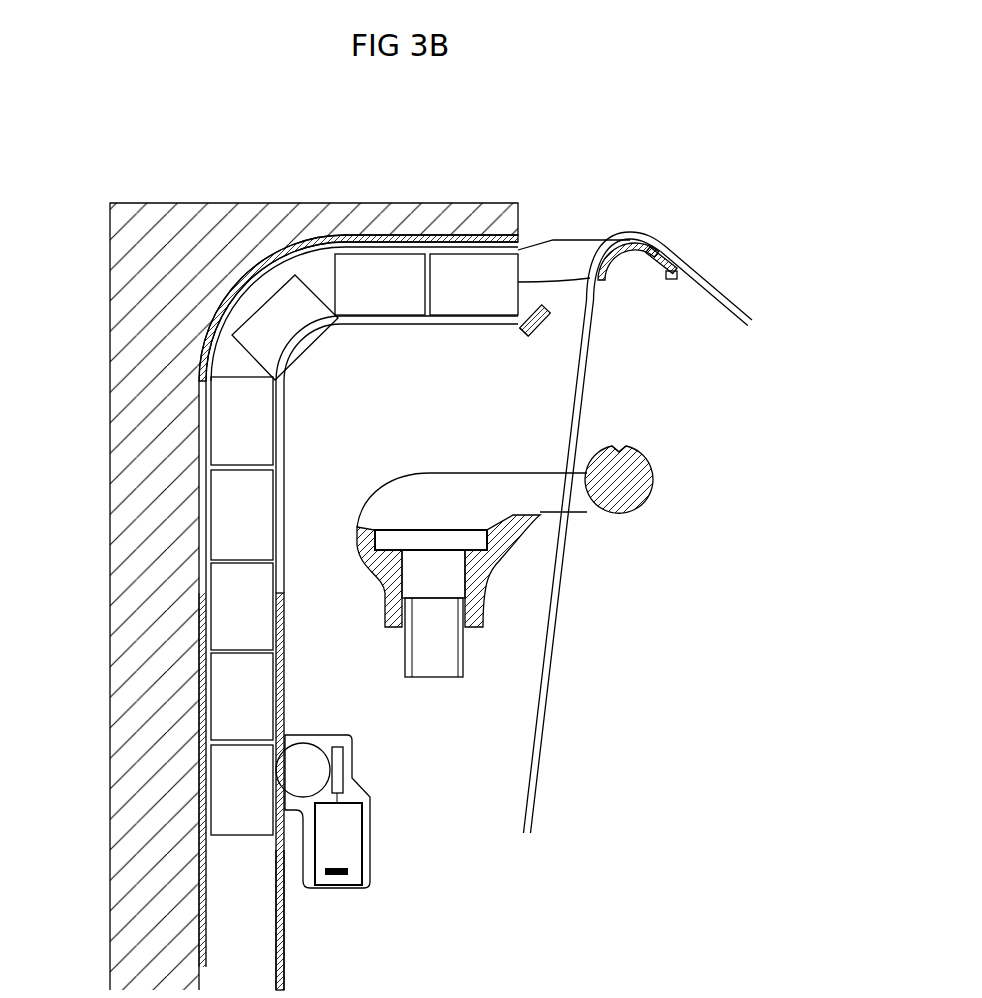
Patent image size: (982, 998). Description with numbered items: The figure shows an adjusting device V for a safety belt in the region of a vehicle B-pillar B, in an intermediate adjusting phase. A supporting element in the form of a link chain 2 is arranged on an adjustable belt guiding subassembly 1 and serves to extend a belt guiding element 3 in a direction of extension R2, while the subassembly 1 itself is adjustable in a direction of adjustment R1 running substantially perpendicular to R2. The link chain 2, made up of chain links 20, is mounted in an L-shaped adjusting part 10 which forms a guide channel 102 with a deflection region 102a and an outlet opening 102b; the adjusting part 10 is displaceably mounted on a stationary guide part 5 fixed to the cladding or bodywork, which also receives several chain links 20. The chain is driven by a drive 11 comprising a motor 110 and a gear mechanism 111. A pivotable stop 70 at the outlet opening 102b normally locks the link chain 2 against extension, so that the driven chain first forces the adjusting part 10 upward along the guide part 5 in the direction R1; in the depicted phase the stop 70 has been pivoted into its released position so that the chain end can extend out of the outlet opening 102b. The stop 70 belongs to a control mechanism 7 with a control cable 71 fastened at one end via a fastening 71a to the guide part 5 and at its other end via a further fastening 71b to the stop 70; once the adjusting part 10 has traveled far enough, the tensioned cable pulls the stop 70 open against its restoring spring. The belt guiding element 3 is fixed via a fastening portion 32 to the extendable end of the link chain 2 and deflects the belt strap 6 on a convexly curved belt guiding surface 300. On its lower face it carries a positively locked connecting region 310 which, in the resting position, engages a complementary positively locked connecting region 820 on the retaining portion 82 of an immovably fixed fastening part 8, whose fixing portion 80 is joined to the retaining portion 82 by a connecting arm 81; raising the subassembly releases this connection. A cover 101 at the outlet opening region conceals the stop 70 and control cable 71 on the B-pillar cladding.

The belt guiding subassembly 1 is at (437, 820).
The link chain 2 is at (262, 893).
The belt guiding element 3 is at (645, 495).
The guide part 5 is at (200, 656).
The belt strap 6 is at (729, 291).
The control mechanism 7 is at (432, 585).
The fastening part 8 is at (516, 549).
The adjusting part 10 is at (200, 427).
The drive 11 is at (359, 839).
The chain links 20 is at (232, 762).
The fastening portion 32 is at (573, 280).
The stop 70 is at (538, 307).
The control cable 71 is at (327, 350).
The fastening 71a is at (276, 596).
The further fastening 71b is at (522, 331).
The fixing portion 80 is at (365, 532).
The connecting arm 81 is at (578, 505).
The retaining portion 82 is at (636, 490).
The cover 101 is at (377, 235).
The guide channel 102 is at (200, 562).
The deflection region 102a is at (257, 288).
The outlet opening 102b is at (520, 250).
The motor 110 is at (345, 827).
The gear mechanism 111 is at (338, 748).
The belt guiding surface 300 is at (638, 232).
The positively locked connecting region 310 is at (650, 256).
The positively locked connecting region 820 is at (637, 447).
The adjusting device V is at (177, 233).
The B-pillar B is at (82, 268).
The direction of adjustment R1 is at (170, 480).
The direction of extension R2 is at (642, 330).